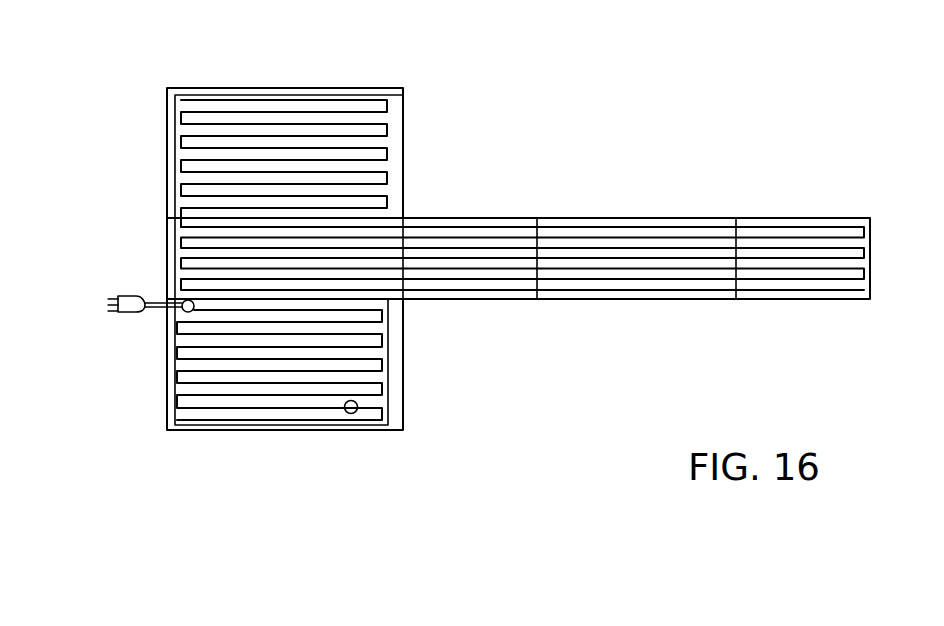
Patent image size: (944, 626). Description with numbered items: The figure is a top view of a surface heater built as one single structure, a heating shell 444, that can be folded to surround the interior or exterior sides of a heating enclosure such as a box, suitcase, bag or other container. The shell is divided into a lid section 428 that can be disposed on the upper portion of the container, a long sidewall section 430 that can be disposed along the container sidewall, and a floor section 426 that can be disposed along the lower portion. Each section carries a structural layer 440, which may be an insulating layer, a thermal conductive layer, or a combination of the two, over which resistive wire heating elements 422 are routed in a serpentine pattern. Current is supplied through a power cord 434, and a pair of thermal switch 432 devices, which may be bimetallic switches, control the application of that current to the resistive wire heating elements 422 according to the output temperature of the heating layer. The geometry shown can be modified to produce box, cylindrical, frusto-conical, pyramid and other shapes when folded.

The heating shell 444 is at (118, 84).
The structural layer 440 is at (462, 78).
The lid section 428 is at (405, 141).
The sidewall section 430 is at (380, 277).
The floor section 426 is at (403, 392).
The resistive wire heating elements 422 is at (855, 288).
The power cord 434 is at (130, 293).
The thermal switch 432 is at (345, 407).